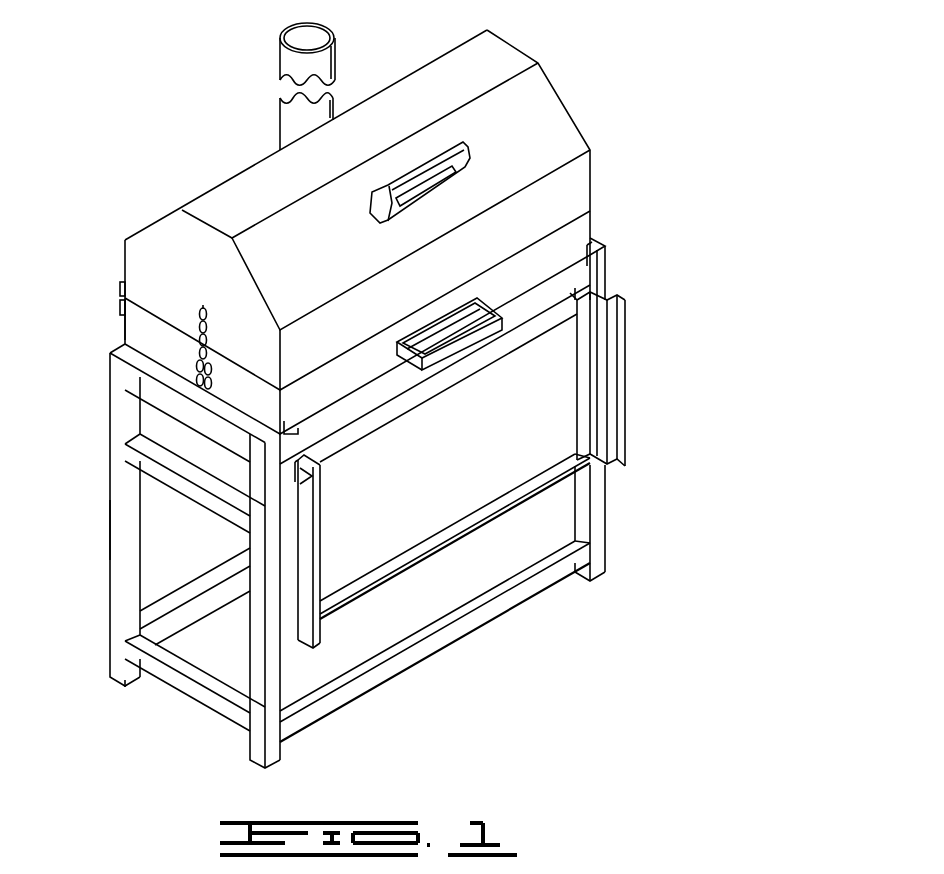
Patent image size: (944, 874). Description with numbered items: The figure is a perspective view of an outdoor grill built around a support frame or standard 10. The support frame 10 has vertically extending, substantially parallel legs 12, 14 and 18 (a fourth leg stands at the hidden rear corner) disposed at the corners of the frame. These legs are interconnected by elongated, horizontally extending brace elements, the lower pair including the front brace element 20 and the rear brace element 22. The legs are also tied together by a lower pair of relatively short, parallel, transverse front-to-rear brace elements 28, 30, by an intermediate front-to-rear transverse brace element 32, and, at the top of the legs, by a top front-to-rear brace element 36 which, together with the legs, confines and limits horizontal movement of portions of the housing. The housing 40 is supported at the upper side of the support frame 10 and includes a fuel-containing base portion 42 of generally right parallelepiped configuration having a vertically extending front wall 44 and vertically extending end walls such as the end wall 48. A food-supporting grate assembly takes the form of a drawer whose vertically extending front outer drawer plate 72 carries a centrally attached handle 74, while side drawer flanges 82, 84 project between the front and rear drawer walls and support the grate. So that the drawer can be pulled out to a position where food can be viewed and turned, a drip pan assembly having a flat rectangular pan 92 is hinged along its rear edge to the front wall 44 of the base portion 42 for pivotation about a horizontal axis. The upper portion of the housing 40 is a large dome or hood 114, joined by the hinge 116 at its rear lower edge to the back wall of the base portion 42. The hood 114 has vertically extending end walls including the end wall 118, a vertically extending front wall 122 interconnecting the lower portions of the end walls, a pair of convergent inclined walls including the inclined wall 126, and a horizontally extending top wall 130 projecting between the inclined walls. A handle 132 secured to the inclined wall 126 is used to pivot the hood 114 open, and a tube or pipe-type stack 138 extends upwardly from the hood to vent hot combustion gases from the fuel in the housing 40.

The support frame 10 is at (104, 570).
The leg 12 is at (130, 597).
The leg 14 is at (281, 690).
The leg 18 is at (596, 278).
The front brace element 20 is at (390, 652).
The rear brace element 22 is at (212, 585).
The transverse front-to-rear brace element 28 is at (185, 688).
The transverse front-to-rear brace element 30 is at (538, 519).
The intermediate front-to-rear transverse brace element 32 is at (163, 463).
The top front-to-rear brace element 36 is at (130, 378).
The housing 40 is at (594, 144).
The fuel-containing base portion 42 is at (116, 323).
The front wall 44 is at (293, 489).
The end wall 48 is at (263, 405).
The front outer drawer plate 72 is at (378, 377).
The handle 74 is at (453, 343).
The side drawer flange 82 is at (292, 428).
The side drawer flange 84 is at (585, 262).
The flat pan 92 is at (454, 485).
The hood 114 is at (135, 226).
The hinge 116 is at (120, 296).
The end wall 118 is at (205, 285).
The front wall 122 is at (420, 302).
The inclined wall 126 is at (540, 153).
The top wall 130 is at (310, 183).
The handle 132 is at (412, 170).
The stack 138 is at (318, 70).